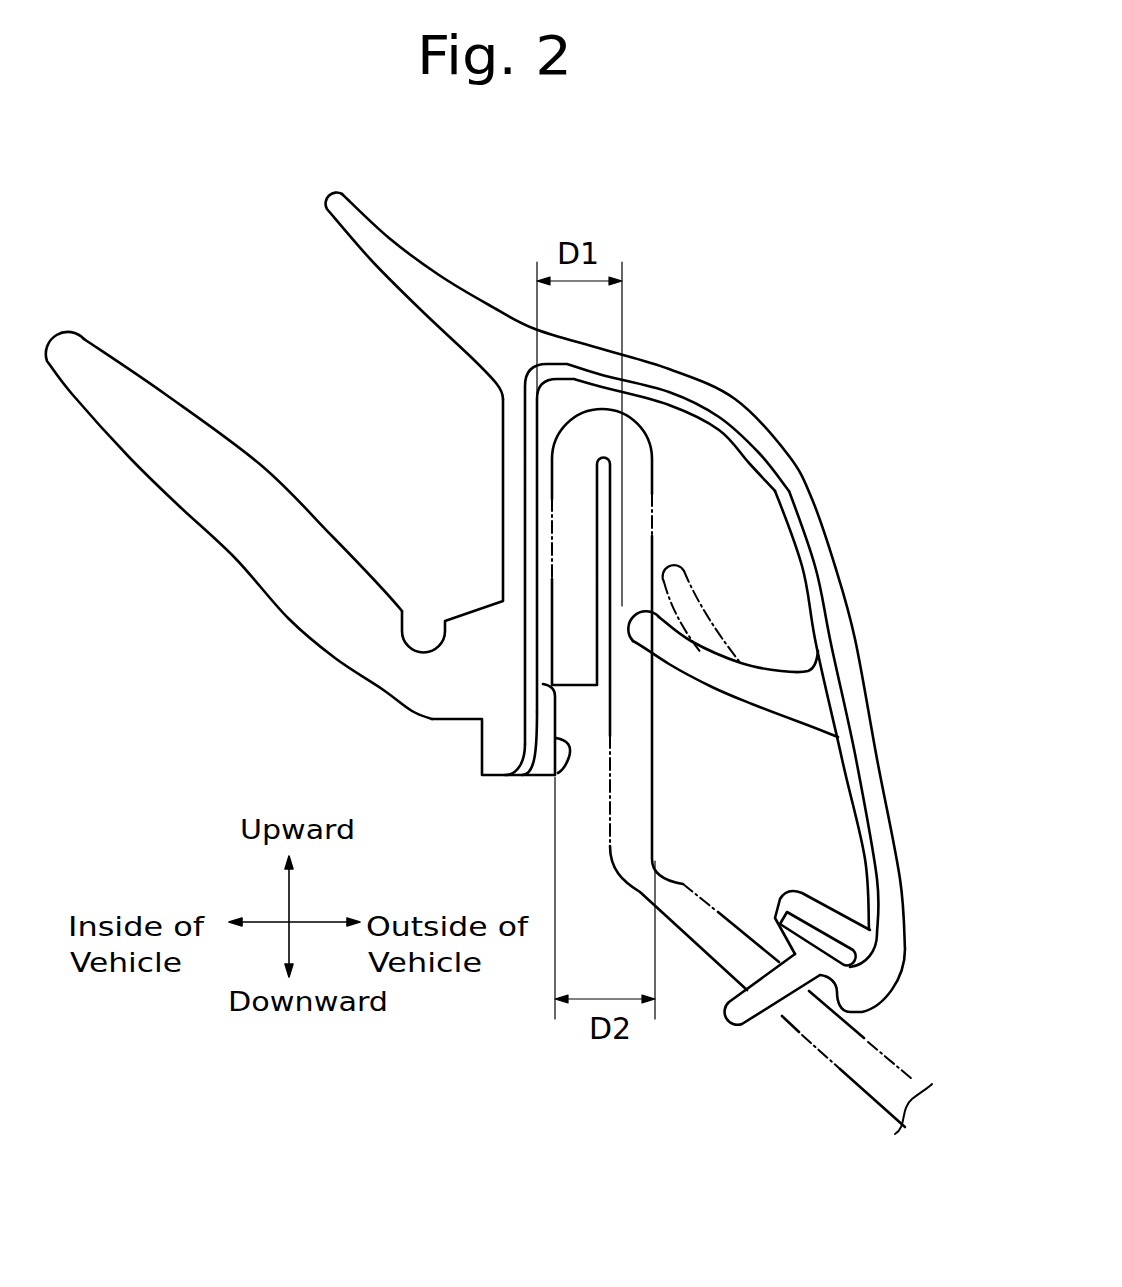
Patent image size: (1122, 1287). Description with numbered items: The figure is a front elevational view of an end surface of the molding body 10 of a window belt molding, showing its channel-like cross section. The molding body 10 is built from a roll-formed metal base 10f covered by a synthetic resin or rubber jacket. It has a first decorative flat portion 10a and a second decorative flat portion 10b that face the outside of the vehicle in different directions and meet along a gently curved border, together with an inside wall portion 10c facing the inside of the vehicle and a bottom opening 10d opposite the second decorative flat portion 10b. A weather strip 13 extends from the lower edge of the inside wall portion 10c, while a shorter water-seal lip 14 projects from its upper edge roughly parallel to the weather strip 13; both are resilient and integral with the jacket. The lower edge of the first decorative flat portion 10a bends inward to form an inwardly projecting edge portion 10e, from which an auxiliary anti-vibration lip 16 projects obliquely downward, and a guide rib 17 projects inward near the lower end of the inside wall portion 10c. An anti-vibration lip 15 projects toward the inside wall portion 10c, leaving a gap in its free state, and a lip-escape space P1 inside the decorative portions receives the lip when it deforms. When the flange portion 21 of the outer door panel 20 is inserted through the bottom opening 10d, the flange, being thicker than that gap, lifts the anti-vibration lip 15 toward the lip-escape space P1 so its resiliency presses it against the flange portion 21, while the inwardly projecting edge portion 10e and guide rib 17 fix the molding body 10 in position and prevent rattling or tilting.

The molding body 10 is at (842, 345).
The first decorative flat portion 10a is at (862, 668).
The second decorative flat portion 10b is at (670, 370).
The inside wall portion 10c is at (512, 527).
The bottom opening 10d is at (770, 905).
The inwardly projecting edge portion 10e is at (820, 915).
The metal base 10f is at (865, 843).
The weather strip 13 is at (158, 417).
The water-seal lip 14 is at (388, 260).
The anti-vibration lip 15 is at (688, 587).
The auxiliary anti-vibration lip 16 is at (731, 1018).
The guide rib 17 is at (557, 776).
The outer door panel 20 is at (847, 1088).
The flange portion 21 is at (645, 730).
The lip-escape space P1 is at (760, 517).